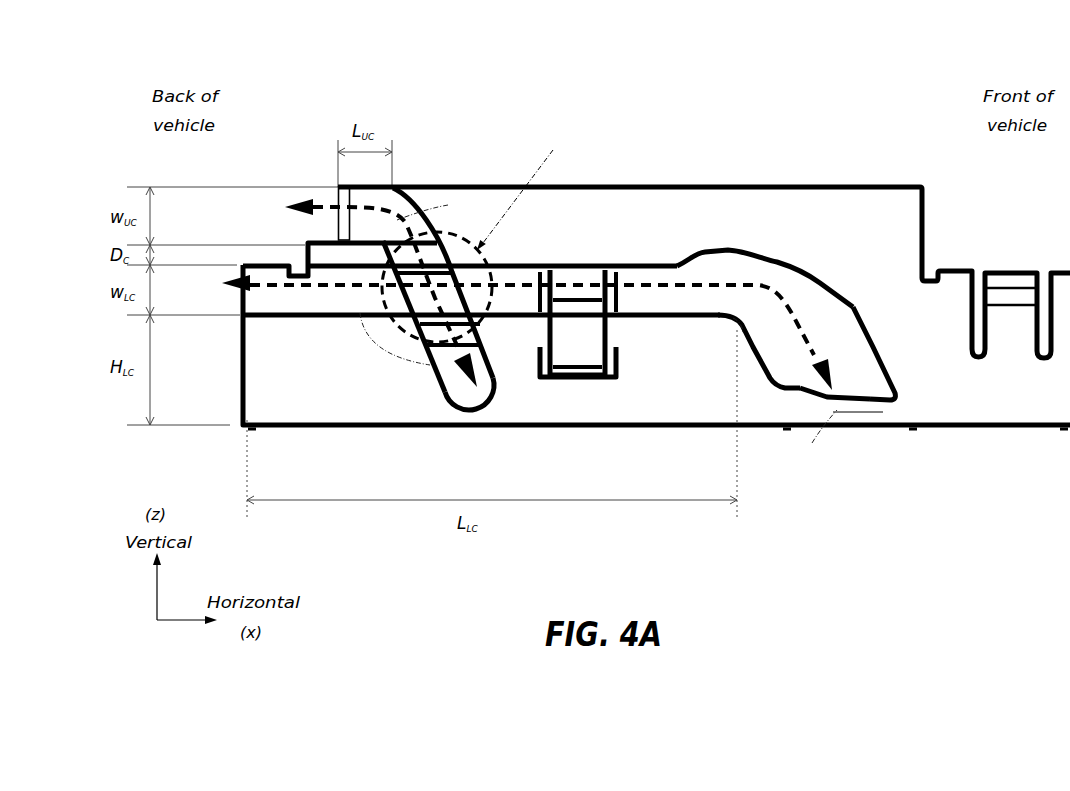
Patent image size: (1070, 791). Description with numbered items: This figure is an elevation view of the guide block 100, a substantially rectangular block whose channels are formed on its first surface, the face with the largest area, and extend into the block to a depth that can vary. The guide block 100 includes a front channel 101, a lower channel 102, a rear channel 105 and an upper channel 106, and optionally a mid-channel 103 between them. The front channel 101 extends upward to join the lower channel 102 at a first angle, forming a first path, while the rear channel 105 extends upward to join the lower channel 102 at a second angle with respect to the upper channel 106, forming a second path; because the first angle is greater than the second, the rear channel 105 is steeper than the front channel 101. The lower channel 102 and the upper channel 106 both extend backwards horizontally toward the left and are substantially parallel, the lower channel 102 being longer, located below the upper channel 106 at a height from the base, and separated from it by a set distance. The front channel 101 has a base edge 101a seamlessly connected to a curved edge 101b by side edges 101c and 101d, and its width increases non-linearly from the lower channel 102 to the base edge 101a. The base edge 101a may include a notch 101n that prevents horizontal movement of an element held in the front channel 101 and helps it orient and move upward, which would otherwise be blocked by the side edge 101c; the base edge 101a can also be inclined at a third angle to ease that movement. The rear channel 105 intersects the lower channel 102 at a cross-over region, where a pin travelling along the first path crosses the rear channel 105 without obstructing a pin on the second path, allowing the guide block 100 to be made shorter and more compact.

The guide block 100 is at (712, 137).
The front channel 101 is at (814, 344).
The base edge 101a is at (843, 393).
The curved edge 101b is at (803, 260).
The side edge 101c is at (760, 357).
The side edge 101d is at (890, 360).
The notch 101n is at (793, 400).
The lower channel 102 is at (650, 302).
The mid-channel 103 is at (577, 340).
The rear channel 105 is at (453, 385).
The upper channel 106 is at (358, 235).